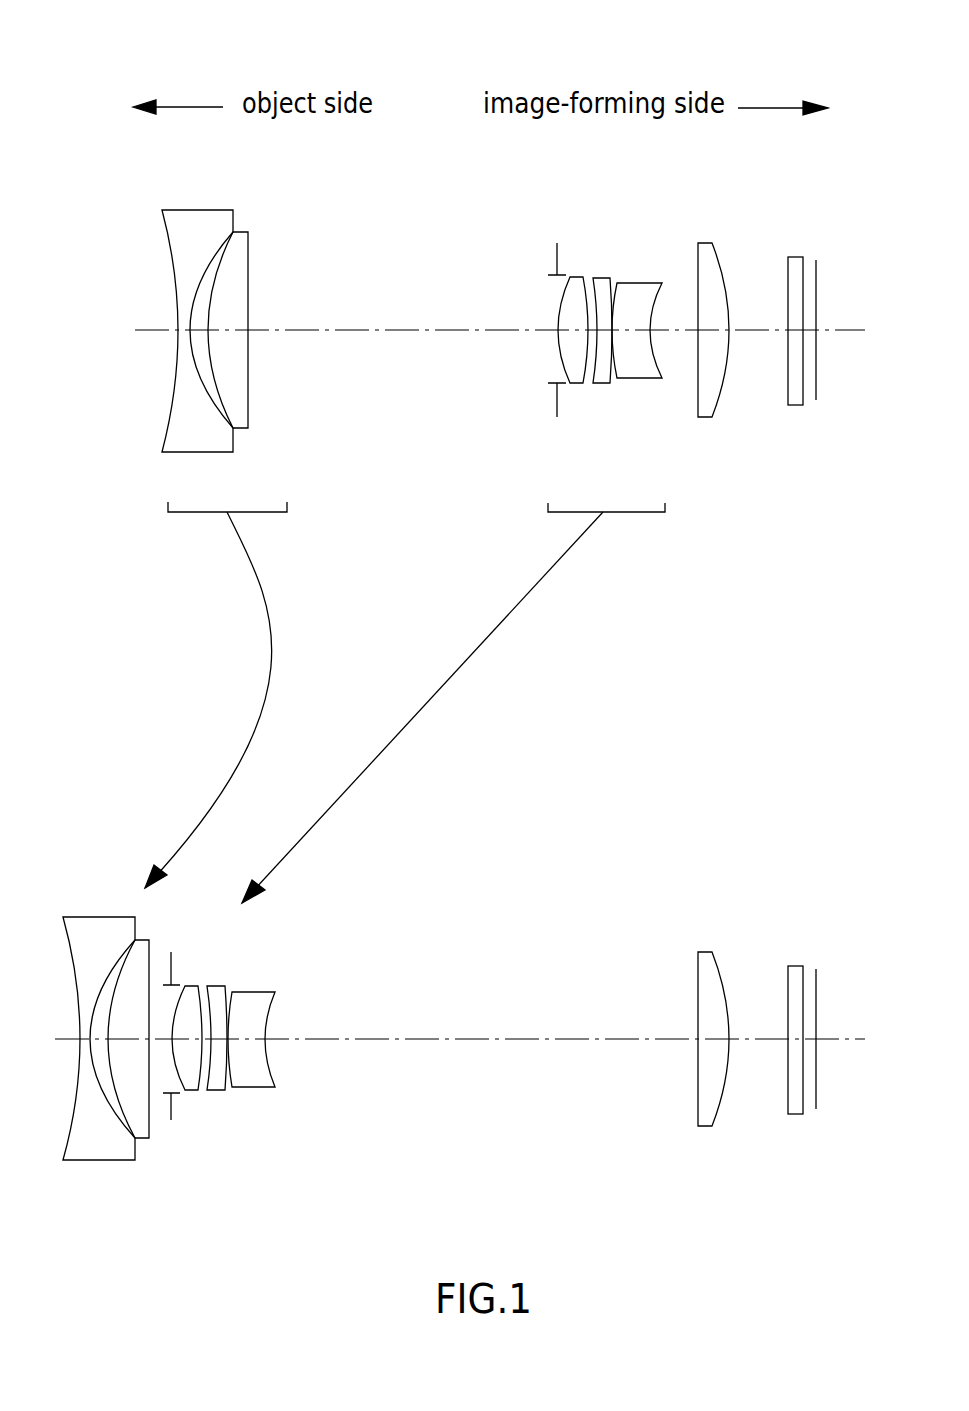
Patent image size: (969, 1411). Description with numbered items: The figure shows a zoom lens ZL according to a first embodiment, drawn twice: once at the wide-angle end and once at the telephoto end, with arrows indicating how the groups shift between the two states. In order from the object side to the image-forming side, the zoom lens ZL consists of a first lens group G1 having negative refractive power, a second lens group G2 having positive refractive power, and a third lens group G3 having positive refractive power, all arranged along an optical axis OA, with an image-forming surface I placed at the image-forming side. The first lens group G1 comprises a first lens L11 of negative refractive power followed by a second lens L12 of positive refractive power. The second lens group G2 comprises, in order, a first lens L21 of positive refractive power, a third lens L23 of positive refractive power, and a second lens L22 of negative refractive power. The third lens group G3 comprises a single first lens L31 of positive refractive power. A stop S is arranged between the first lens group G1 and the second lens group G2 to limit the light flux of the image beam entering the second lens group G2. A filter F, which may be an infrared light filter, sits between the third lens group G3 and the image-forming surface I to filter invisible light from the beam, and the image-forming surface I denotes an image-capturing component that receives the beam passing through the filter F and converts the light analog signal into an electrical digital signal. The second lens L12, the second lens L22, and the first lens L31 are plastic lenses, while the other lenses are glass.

The zoom lens ZL is at (95, 36).
The first lens group G1 is at (256, 195).
The second lens group G2 is at (663, 262).
The third lens group G3 is at (725, 238).
The first lens of the first lens group L11 is at (196, 453).
The second lens of the first lens group L12 is at (238, 430).
The first lens of the second lens group L21 is at (575, 385).
The second lens of the second lens group L22 is at (645, 380).
The third lens of the second lens group L23 is at (602, 385).
The first lens of the third lens group L31 is at (703, 418).
The stop S is at (557, 402).
The filter F is at (793, 256).
The image-forming surface I is at (816, 268).
The optical axis OA is at (474, 687).